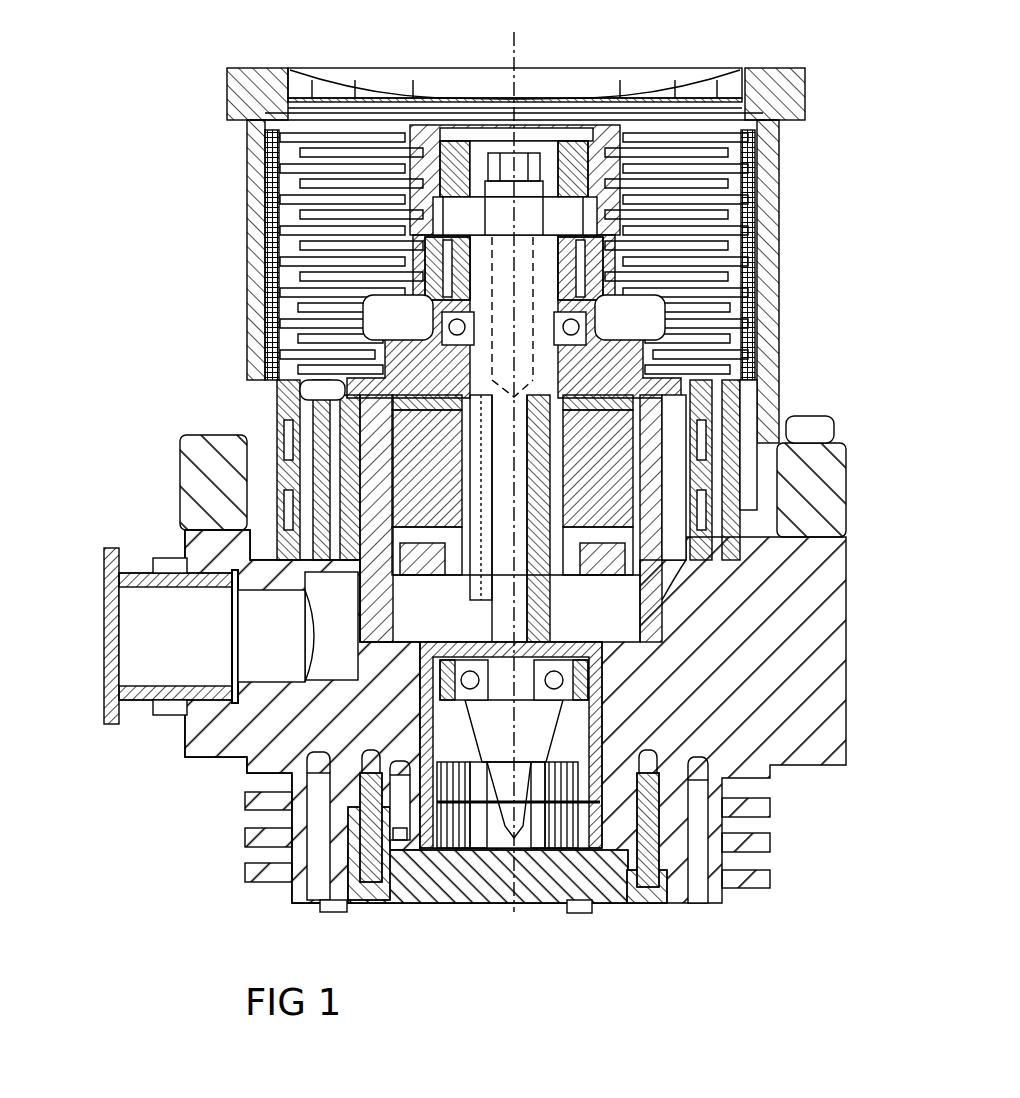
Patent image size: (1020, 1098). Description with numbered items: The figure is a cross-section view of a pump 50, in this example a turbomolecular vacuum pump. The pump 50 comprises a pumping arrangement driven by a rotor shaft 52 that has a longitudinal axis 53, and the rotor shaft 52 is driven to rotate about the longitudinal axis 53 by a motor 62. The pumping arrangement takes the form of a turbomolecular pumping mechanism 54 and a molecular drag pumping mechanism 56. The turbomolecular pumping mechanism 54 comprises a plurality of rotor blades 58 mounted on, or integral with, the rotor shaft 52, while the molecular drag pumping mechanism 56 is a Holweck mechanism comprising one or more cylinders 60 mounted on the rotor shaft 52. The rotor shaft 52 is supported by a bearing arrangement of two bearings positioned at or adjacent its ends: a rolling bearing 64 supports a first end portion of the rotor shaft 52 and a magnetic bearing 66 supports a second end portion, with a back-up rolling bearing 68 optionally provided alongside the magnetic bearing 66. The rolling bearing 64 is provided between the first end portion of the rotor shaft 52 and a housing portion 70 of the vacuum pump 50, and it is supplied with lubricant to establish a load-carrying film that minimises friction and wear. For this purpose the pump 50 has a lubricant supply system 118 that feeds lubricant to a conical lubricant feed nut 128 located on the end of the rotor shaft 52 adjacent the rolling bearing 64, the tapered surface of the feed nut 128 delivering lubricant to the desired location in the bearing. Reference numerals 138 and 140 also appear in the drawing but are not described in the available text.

The pump 50 is at (862, 520).
The rotor shaft 52 is at (528, 613).
The longitudinal axis 53 is at (514, 32).
The turbomolecular pumping mechanism 54 is at (800, 201).
The molecular drag pumping mechanism 56 is at (845, 420).
The rotor blades 58 is at (296, 183).
The cylinders 60 is at (758, 390).
The motor 62 is at (345, 430).
The rolling bearing 64 is at (457, 644).
The magnetic bearing 66 is at (463, 264).
The back-up rolling bearing 68 is at (445, 330).
The housing portion 70 is at (838, 727).
The lubricant supply system 118 is at (446, 872).
The conical lubricant feed nut 128 is at (565, 744).
The inlet screen 138 is at (626, 70).
The exhaust port 140 is at (126, 667).